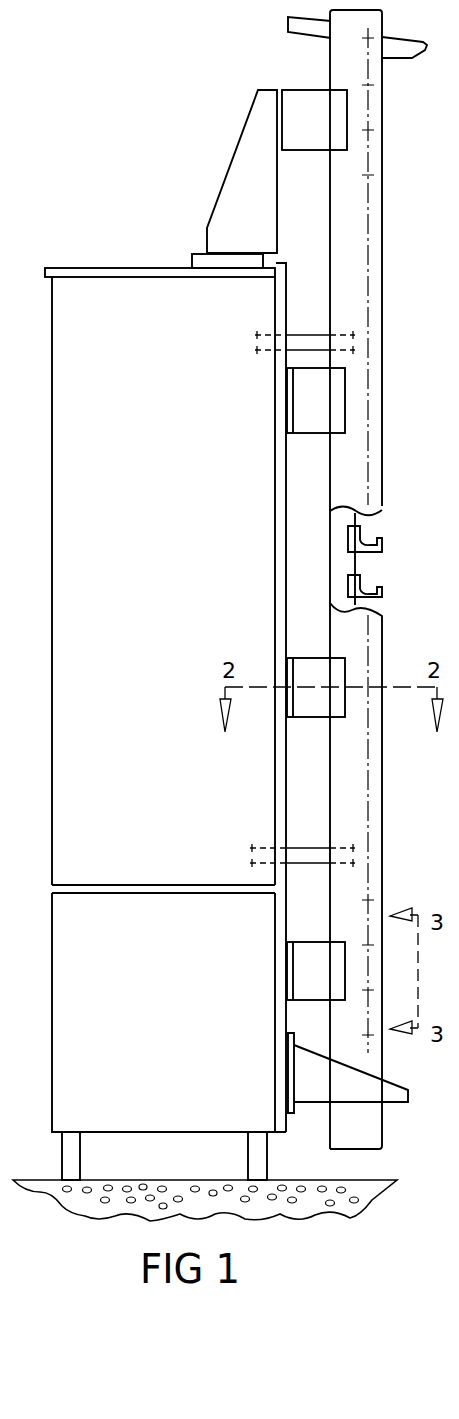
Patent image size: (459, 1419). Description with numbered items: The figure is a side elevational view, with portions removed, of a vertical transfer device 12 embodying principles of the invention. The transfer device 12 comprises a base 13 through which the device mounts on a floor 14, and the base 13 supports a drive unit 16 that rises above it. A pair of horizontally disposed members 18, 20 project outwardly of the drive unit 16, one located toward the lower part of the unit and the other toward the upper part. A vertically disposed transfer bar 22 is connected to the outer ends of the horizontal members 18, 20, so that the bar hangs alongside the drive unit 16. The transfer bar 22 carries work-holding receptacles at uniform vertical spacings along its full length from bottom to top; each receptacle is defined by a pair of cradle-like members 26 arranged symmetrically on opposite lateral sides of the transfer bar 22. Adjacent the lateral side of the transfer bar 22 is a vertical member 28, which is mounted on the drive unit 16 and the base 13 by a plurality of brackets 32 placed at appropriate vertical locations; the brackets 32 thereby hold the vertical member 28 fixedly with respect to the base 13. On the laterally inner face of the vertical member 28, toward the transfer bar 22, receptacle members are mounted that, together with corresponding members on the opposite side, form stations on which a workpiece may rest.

The transfer device 12 is at (114, 224).
The base 13 is at (52, 1010).
The floor 14 is at (372, 1195).
The drive unit 16 is at (52, 563).
The horizontally disposed member 18 is at (312, 858).
The horizontally disposed member 20 is at (305, 342).
The transfer bar 22 is at (358, 568).
The cradle-like member 26 is at (375, 543).
The vertical member 28 is at (373, 209).
The bracket 32 is at (298, 88).